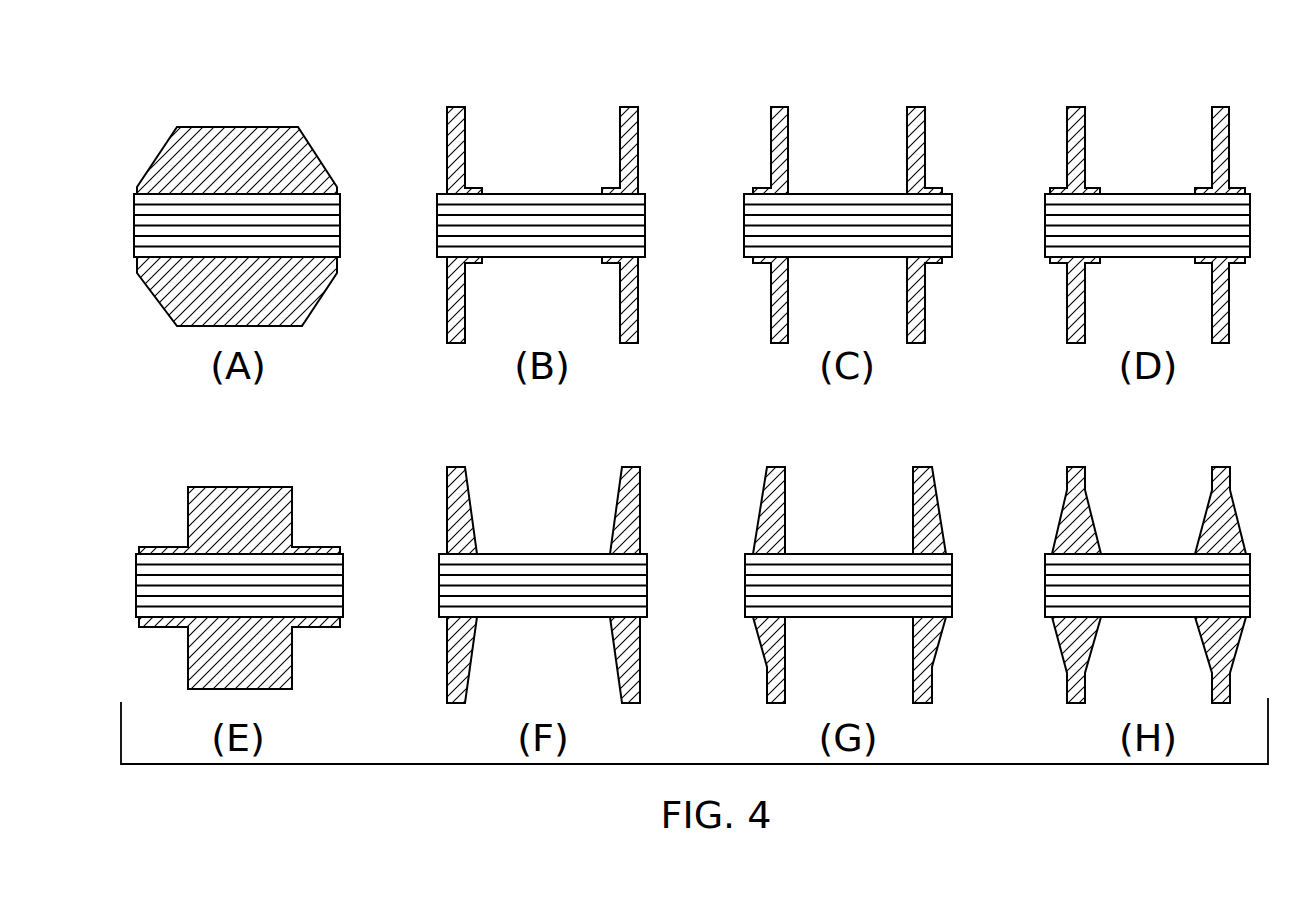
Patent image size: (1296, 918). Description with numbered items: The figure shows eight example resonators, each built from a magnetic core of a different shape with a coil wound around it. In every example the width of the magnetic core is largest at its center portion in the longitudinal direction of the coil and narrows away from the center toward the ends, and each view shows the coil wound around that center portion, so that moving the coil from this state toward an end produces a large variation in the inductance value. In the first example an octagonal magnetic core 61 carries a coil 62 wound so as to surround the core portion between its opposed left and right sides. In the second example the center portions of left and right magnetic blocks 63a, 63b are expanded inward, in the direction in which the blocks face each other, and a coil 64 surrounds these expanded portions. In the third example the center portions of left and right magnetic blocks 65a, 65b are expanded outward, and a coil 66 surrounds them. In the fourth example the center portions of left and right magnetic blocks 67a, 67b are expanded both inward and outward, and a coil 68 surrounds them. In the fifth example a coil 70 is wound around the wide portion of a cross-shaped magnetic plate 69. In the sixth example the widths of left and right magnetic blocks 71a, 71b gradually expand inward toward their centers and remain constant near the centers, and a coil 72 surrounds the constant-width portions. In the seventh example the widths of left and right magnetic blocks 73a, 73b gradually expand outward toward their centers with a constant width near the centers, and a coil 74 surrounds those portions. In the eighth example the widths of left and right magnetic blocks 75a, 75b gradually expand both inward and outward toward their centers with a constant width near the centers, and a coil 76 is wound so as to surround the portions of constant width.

The octagonal magnetic core 61 is at (237, 127).
The coil 62 is at (341, 220).
The left magnetic block 63a is at (456, 107).
The right magnetic block 63b is at (630, 107).
The coil 64 is at (545, 194).
The left magnetic block 65a is at (780, 107).
The right magnetic block 65b is at (916, 107).
The coil 66 is at (850, 194).
The left magnetic block 67a is at (1075, 107).
The right magnetic block 67b is at (1220, 107).
The coil 68 is at (1150, 194).
The cross-shaped magnetic plate 69 is at (240, 487).
The coil 70 is at (344, 582).
The left magnetic block 71a is at (457, 467).
The right magnetic block 71b is at (632, 467).
The coil 72 is at (546, 554).
The left magnetic block 73a is at (777, 467).
The right magnetic block 73b is at (923, 467).
The coil 74 is at (851, 554).
The left magnetic block 75a is at (1075, 467).
The right magnetic block 75b is at (1222, 467).
The coil 76 is at (1151, 554).